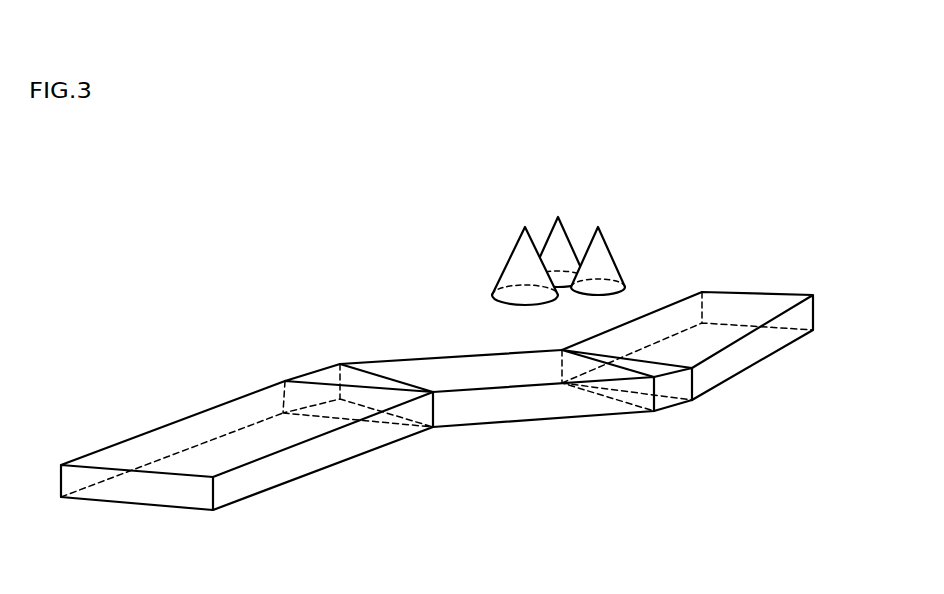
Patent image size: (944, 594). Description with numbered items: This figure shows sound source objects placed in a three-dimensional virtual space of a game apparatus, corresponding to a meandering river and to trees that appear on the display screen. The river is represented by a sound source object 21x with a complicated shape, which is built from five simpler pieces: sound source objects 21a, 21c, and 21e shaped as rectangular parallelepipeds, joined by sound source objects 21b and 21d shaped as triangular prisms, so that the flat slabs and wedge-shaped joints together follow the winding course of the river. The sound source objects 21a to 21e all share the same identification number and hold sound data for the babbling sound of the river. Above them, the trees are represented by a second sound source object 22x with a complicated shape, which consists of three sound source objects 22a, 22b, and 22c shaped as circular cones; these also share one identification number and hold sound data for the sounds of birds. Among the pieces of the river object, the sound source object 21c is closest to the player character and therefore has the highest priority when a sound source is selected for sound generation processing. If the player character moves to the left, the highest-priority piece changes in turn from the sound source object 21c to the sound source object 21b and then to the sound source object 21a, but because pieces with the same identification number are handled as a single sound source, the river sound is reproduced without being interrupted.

The sound source object with a complicated shape 21x is at (389, 470).
The sound source object 21a is at (200, 410).
The sound source object 21b is at (312, 372).
The sound source object 21c is at (515, 422).
The sound source object 21d is at (672, 412).
The sound source object 21e is at (785, 347).
The sound source object with a complicated shape 22x is at (620, 194).
The sound source object 22a is at (510, 253).
The sound source object 22b is at (567, 228).
The sound source object 22c is at (608, 245).